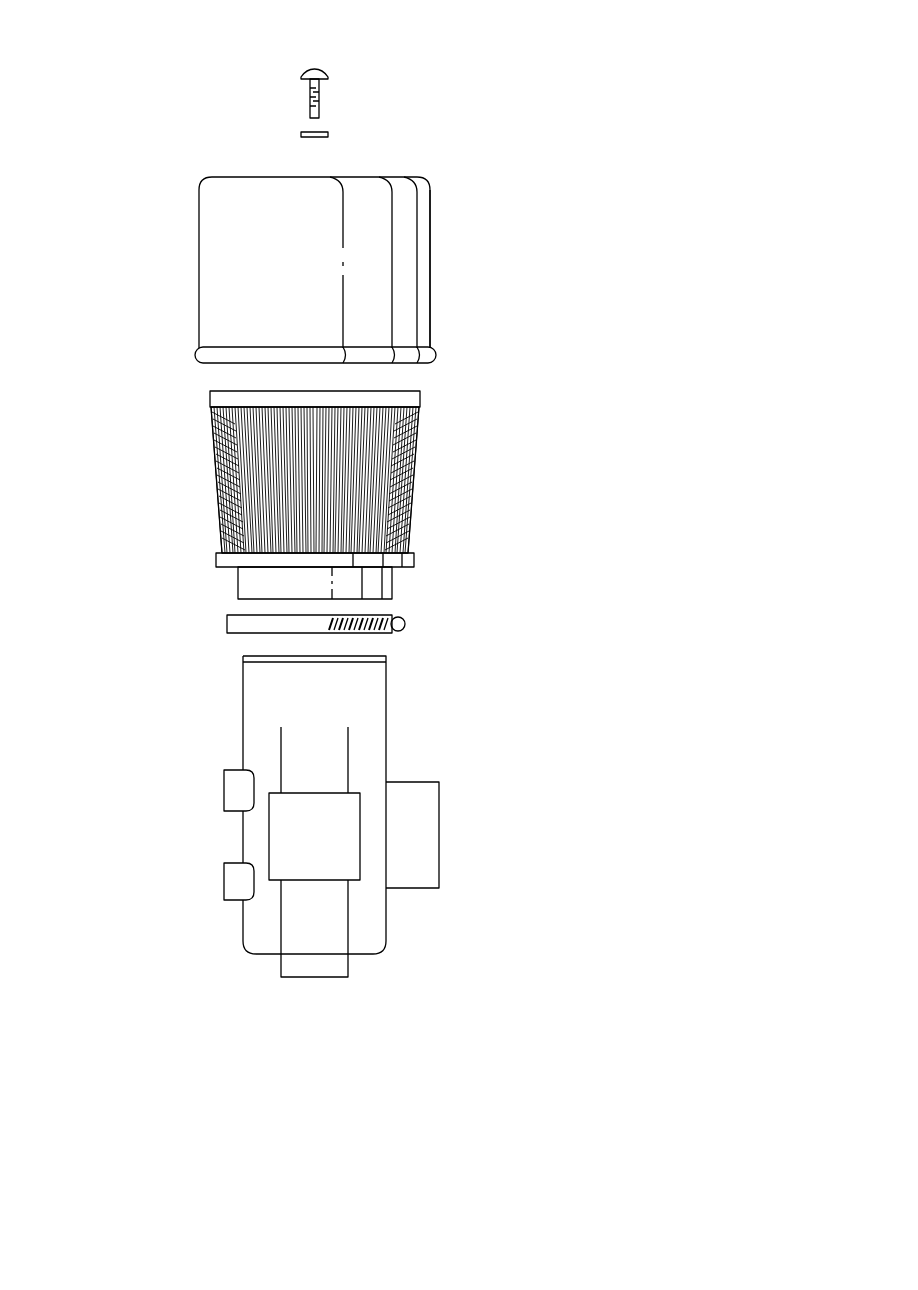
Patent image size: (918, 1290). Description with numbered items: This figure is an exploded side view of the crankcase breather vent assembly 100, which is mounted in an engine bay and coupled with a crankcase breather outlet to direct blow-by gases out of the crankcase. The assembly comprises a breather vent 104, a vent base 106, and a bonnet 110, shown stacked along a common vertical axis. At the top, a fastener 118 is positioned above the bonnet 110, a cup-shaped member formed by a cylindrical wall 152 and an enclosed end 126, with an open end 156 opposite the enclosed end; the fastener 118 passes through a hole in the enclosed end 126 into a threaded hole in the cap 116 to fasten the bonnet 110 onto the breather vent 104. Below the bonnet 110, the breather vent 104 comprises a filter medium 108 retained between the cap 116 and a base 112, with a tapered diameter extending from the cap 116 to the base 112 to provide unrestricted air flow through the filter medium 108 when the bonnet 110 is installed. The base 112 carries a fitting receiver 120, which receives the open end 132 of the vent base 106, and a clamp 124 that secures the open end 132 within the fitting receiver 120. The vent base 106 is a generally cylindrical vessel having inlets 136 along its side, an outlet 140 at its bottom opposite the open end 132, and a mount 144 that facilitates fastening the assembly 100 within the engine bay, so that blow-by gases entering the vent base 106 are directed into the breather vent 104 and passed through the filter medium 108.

The crankcase breather vent assembly 100 is at (434, 55).
The breather vent 104 is at (423, 572).
The vent base 106 is at (213, 998).
The filter medium 108 is at (407, 480).
The bonnet 110 is at (190, 124).
The base 112 is at (220, 562).
The cap 116 is at (405, 398).
The fastener 118 is at (310, 69).
The fitting receiver 120 is at (257, 588).
The clamp 124 is at (404, 630).
The enclosed end 126 is at (370, 177).
The open end 132 is at (258, 655).
The inlets 136 is at (237, 798).
The outlet 140 is at (302, 977).
The mount 144 is at (422, 815).
The cylindrical wall 152 is at (430, 240).
The open end 156 is at (214, 364).